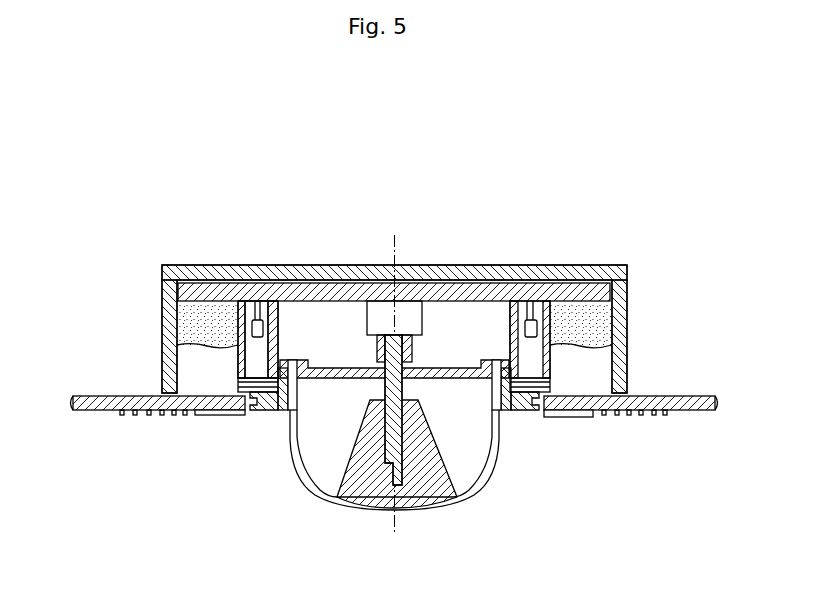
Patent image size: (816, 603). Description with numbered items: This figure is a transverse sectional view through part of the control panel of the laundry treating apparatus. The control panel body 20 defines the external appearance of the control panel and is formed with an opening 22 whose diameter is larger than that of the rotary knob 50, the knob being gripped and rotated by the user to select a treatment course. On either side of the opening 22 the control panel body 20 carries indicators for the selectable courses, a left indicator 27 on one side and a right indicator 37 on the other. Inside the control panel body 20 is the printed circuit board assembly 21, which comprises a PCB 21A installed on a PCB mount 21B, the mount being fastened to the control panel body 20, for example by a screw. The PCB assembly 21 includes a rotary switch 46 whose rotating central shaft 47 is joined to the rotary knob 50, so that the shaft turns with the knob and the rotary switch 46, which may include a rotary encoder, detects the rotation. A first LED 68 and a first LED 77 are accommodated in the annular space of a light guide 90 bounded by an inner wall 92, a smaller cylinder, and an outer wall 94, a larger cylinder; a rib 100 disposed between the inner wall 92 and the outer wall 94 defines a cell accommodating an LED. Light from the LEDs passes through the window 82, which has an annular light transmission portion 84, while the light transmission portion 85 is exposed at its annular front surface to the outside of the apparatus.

The control panel body 20 is at (394, 444).
The printed circuit board assembly 21 is at (422, 274).
The PCB 21A is at (475, 297).
The PCB mount 21B is at (583, 275).
The opening 22 is at (242, 391).
The left indicator 27 is at (622, 413).
The right indicator 37 is at (135, 413).
The rotary switch 46 is at (375, 308).
The rotating central shaft 47 is at (403, 470).
The rotary knob 50 is at (362, 502).
The first LED 68 is at (260, 333).
The first LED 77 is at (532, 323).
The window 82 is at (245, 413).
The annular light transmission portion 84 is at (260, 414).
The light transmission portion 85 is at (250, 414).
The light guide 90 is at (242, 362).
The inner wall 92 is at (272, 303).
The outer wall 94 is at (240, 327).
The rib 100 is at (258, 352).